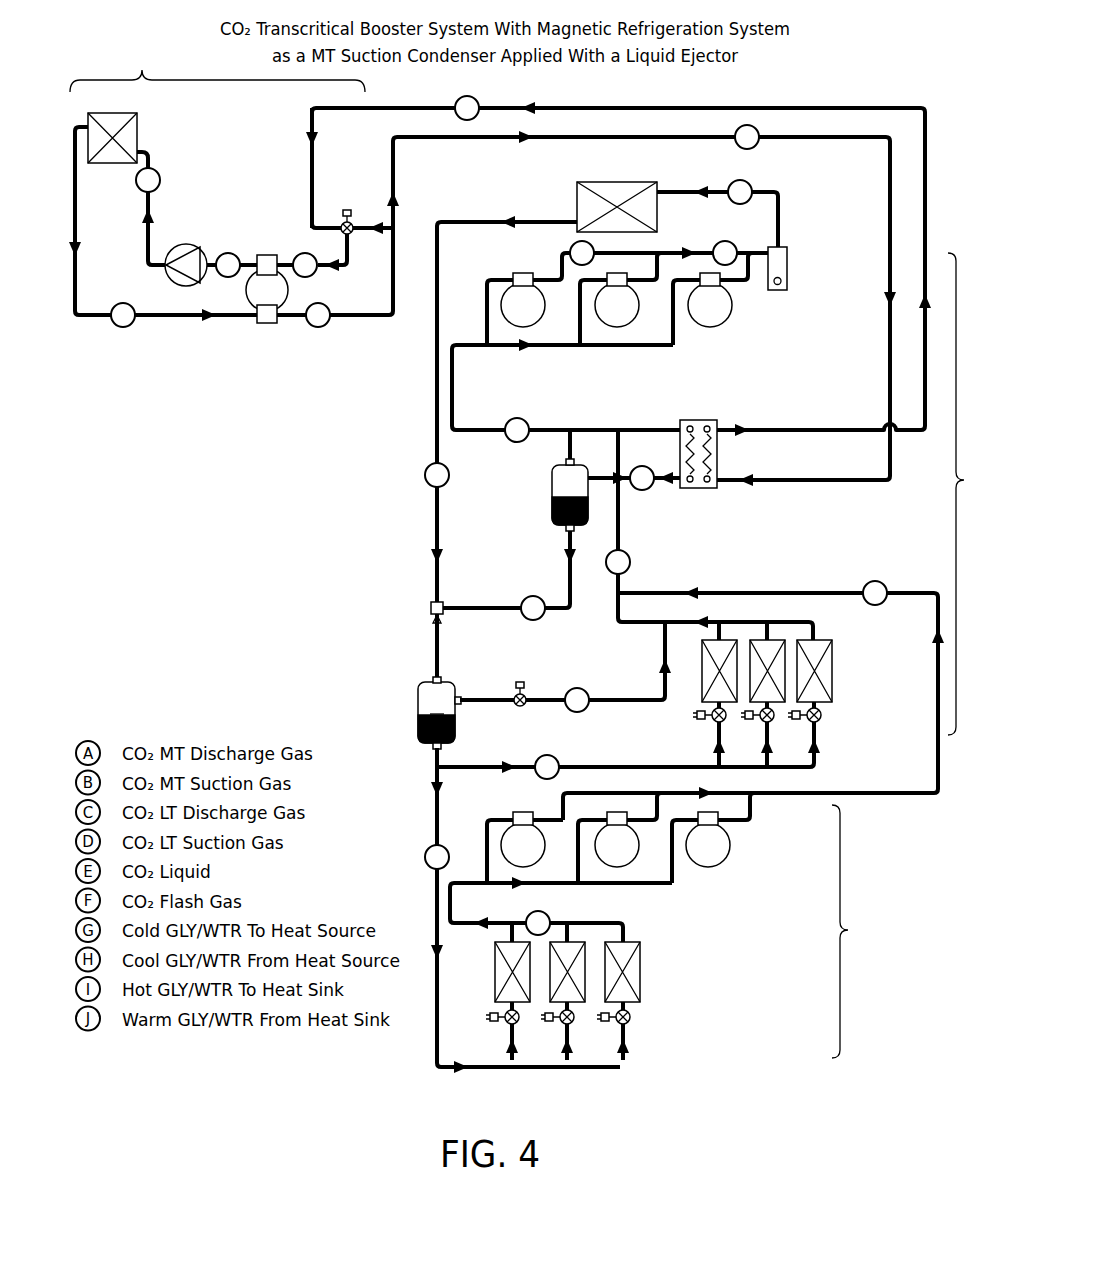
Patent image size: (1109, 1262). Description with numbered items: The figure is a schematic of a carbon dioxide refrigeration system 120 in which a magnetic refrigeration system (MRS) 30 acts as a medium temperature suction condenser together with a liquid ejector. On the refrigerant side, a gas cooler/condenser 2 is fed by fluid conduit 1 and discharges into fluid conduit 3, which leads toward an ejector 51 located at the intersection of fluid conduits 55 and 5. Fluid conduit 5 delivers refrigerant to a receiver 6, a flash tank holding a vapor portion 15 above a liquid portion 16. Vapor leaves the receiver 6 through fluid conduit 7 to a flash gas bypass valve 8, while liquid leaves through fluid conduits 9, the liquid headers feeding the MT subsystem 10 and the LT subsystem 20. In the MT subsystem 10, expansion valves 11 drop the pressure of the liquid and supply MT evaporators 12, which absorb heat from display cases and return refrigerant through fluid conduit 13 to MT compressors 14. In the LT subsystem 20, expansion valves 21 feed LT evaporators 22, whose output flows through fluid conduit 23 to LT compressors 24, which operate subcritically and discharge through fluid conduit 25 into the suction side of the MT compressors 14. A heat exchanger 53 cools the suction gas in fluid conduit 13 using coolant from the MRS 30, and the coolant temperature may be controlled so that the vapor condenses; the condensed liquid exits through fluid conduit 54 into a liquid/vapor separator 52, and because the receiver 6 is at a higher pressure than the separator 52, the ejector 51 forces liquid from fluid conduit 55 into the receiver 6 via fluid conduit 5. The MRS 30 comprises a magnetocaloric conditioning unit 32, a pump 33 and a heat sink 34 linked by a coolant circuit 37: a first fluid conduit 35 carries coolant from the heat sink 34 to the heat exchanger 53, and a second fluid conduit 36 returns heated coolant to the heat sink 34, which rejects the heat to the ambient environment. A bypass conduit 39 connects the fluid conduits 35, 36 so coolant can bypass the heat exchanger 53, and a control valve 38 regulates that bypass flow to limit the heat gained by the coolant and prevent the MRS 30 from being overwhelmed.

The CO2 refrigeration system 120 is at (845, 84).
The magnetic refrigeration system (MRS) 30 is at (217, 83).
The coolant circuit 37 is at (146, 352).
The heat sink 34 is at (106, 165).
The pump 33 is at (188, 244).
The magnetocaloric conditioning unit 32 is at (246, 287).
The control valve 38 is at (341, 233).
The bypass conduit 39 is at (386, 236).
The second fluid conduit 36 is at (283, 258).
The first fluid conduit 35 is at (280, 324).
The gas cooler/condenser 2 is at (660, 214).
The fluid conduit 1 is at (781, 201).
The fluid conduit 3 is at (460, 222).
The MT compressors 14 is at (735, 306).
The fluid conduit 13 is at (487, 428).
The heat exchanger 53 is at (697, 418).
The MT subsystem 10 is at (968, 494).
The liquid/vapor separator 52 is at (550, 478).
The fluid conduit 54 is at (615, 482).
The fluid conduit 55 is at (510, 612).
The ejector 51 is at (430, 611).
The fluid conduit 5 is at (437, 660).
The receiver 6 is at (389, 713).
The CO2 vapor portion 15 is at (437, 705).
The CO2 liquid portion 16 is at (437, 732).
The fluid conduit 7 is at (463, 698).
The flash gas bypass valve 8 is at (522, 690).
The fluid conduits 9 is at (460, 771).
The MT evaporators 12 is at (830, 641).
The expansion valves 11 is at (821, 722).
The fluid conduit 25 is at (948, 782).
The LT compressors 24 is at (732, 847).
The LT subsystem 20 is at (853, 931).
The fluid conduit 23 is at (462, 926).
The LT evaporators 22 is at (640, 943).
The expansion valves 21 is at (626, 1022).